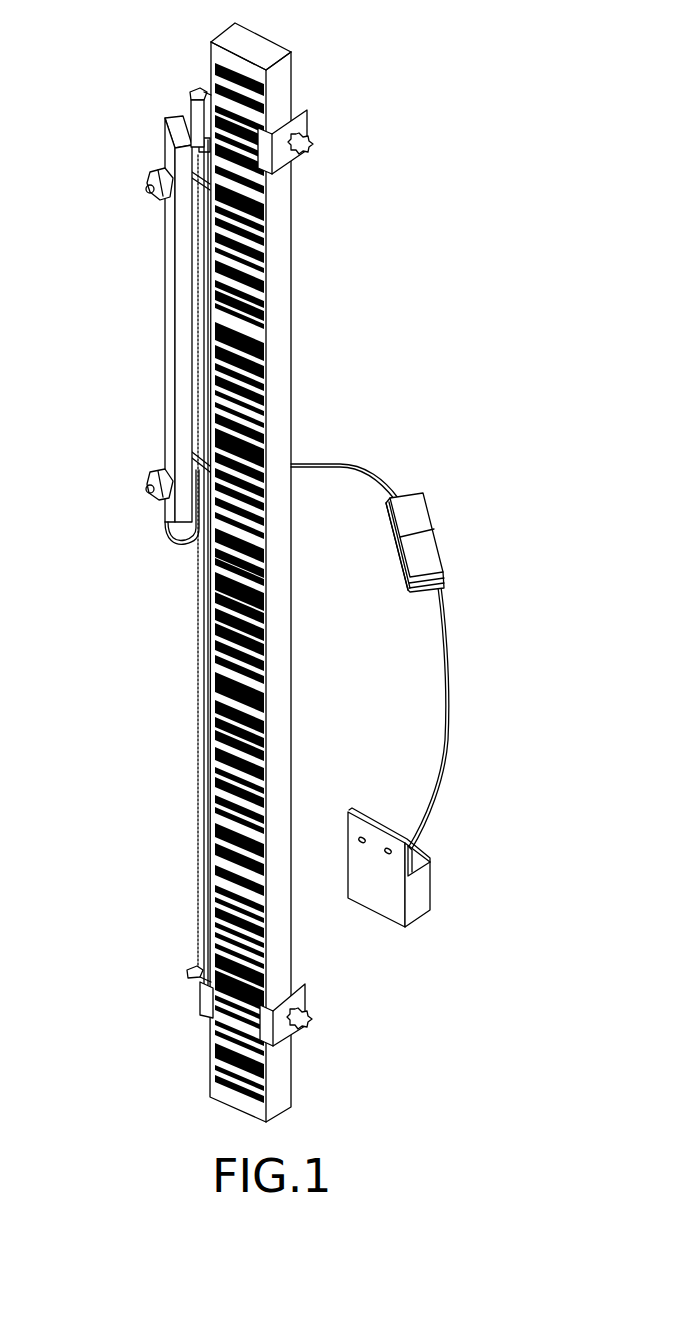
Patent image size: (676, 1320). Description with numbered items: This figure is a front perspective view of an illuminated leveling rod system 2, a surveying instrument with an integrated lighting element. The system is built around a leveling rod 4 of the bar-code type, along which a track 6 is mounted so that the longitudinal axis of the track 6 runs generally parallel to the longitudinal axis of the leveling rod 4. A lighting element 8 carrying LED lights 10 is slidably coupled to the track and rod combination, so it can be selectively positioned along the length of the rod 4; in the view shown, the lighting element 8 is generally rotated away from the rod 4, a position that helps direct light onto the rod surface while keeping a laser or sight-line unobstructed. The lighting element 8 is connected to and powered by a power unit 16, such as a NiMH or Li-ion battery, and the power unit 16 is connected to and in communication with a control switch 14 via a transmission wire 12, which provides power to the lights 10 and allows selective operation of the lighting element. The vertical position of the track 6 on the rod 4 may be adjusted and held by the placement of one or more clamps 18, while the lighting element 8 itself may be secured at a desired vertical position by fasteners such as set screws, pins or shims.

The illuminated leveling rod system 2 is at (418, 197).
The leveling rod 4 is at (287, 350).
The track 6 is at (203, 632).
The lighting element 8 is at (165, 338).
The LED lights 10 is at (165, 213).
The transmission wire 12 is at (383, 473).
The control switch 14 is at (443, 558).
The power unit 16 is at (420, 898).
The clamps 18 is at (308, 123).